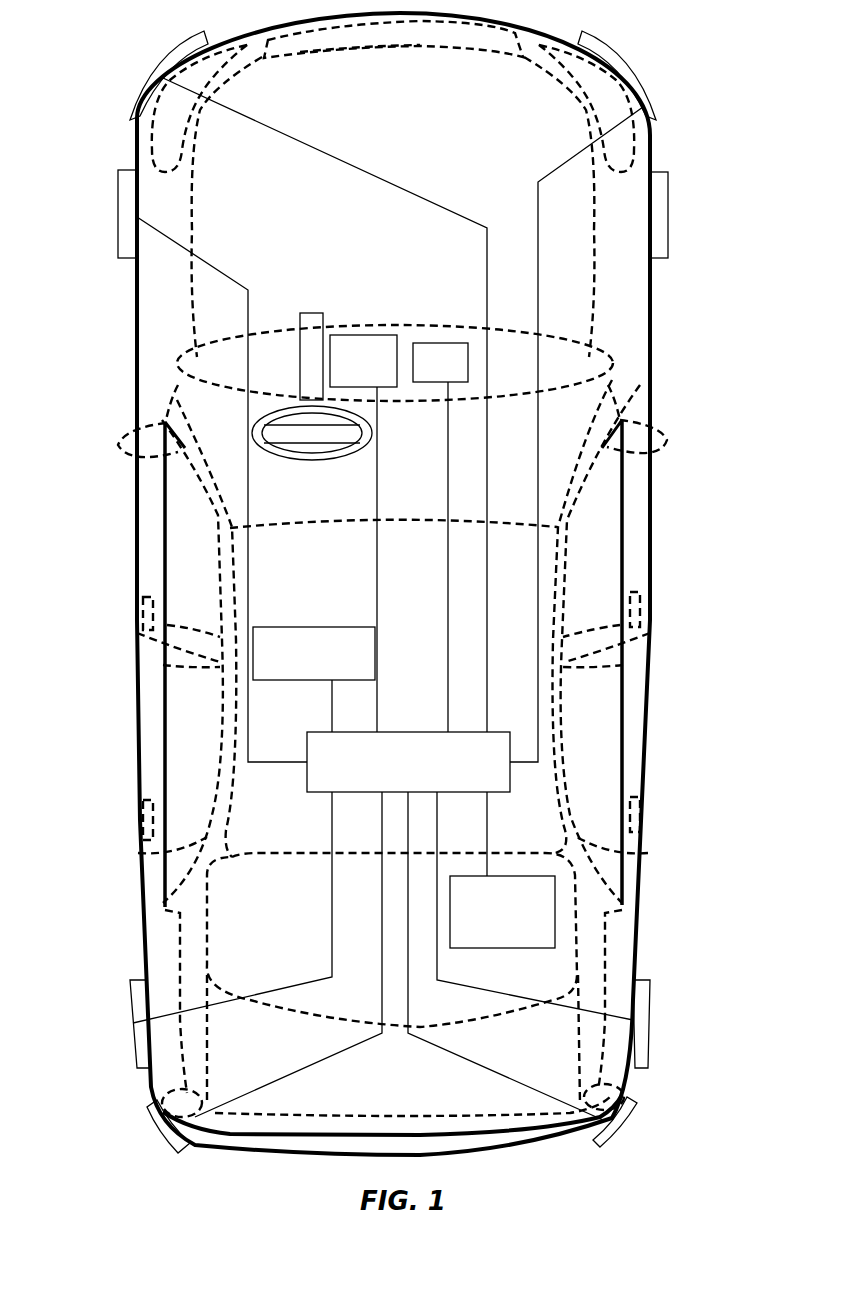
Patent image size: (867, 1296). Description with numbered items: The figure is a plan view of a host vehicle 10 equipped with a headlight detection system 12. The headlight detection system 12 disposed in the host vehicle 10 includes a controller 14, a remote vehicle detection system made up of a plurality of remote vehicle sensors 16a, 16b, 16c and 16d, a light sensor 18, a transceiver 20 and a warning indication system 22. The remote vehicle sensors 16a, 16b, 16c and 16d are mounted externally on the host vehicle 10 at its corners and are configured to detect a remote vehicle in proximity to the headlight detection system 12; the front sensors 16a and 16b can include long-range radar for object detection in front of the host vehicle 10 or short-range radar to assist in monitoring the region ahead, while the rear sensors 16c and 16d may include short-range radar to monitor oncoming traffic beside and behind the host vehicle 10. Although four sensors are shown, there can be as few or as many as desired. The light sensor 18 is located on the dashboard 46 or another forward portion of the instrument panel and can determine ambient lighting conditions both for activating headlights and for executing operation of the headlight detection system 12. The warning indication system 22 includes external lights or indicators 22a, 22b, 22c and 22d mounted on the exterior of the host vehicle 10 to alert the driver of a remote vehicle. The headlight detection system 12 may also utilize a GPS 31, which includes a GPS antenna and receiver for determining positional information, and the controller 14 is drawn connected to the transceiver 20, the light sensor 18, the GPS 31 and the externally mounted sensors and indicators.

The host vehicle 10 is at (703, 400).
The headlight detection system 12 is at (285, 610).
The controller 14 is at (497, 792).
The front sensor 16a is at (660, 97).
The front sensor 16b is at (128, 98).
The rear sensor 16c is at (625, 1132).
The rear sensor 16d is at (160, 1135).
The light sensor 18 is at (440, 362).
The transceiver 20 is at (313, 627).
The warning indication system 22 is at (365, 352).
The external warning light 22a is at (668, 218).
The external warning light 22b is at (118, 218).
The external warning light 22c is at (652, 1032).
The external warning light 22d is at (131, 1032).
The GPS 31 is at (503, 948).
The dashboard 46 is at (575, 375).